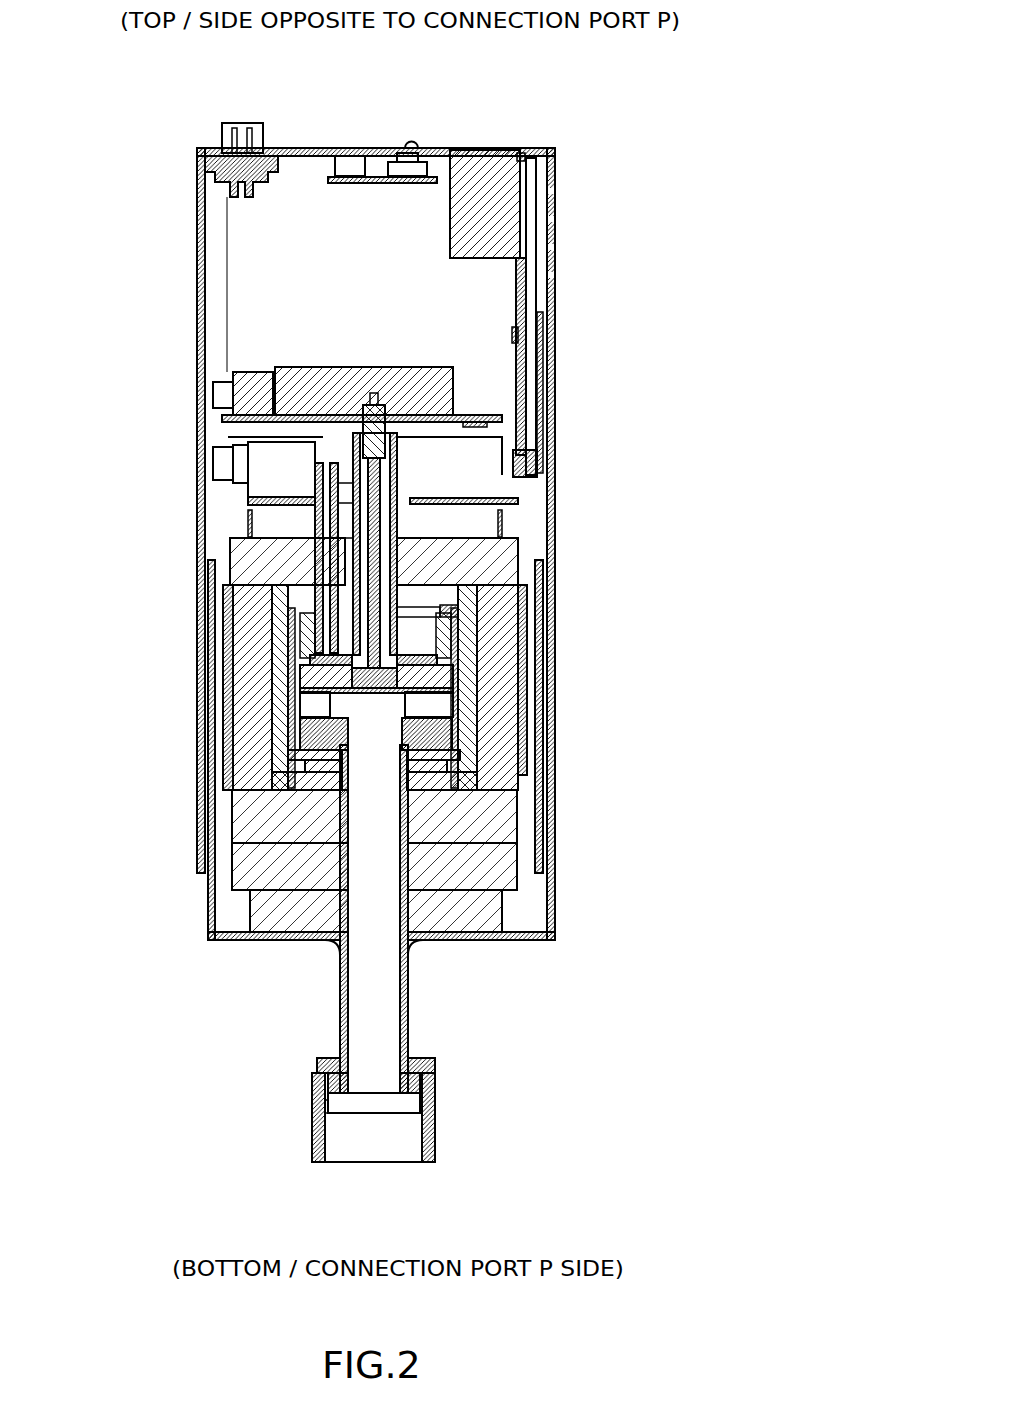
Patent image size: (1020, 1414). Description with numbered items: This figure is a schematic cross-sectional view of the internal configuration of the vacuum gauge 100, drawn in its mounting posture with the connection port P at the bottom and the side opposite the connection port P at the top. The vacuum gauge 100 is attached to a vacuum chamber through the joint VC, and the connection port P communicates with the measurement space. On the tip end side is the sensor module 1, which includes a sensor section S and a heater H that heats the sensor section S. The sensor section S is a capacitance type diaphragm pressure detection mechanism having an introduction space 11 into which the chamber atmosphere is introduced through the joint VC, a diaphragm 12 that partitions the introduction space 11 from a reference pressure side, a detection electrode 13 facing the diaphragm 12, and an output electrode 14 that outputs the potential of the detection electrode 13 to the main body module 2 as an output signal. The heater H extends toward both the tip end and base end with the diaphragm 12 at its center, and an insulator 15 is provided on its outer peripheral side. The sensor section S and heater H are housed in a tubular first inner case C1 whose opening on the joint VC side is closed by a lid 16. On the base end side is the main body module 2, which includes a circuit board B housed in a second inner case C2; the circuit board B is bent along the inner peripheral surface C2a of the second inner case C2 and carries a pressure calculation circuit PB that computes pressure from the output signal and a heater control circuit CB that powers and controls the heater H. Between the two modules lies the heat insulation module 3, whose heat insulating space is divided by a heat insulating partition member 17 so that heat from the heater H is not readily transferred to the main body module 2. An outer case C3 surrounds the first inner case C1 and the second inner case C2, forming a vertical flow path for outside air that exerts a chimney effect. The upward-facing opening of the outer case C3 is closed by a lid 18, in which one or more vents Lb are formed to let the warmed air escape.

The vacuum gauge 100 is at (152, 80).
The lid 18 is at (381, 147).
The vent Lb is at (438, 150).
The circuit board B is at (556, 176).
The main body module 2 is at (658, 234).
The heater control circuit CB is at (372, 367).
The inner peripheral surface C2a is at (518, 333).
The second inner case C2 is at (556, 342).
The pressure calculation circuit PB is at (556, 370).
The outer case C3 is at (197, 440).
The heat insulating partition member 17 is at (518, 500).
The heat insulation module 3 is at (610, 520).
The insulator 15 is at (520, 592).
The heater H is at (480, 633).
The sensor module 1 is at (613, 675).
The sensor section S is at (140, 662).
The output electrode 14 is at (350, 660).
The detection electrode 13 is at (360, 672).
The diaphragm 12 is at (330, 692).
The introduction space 11 is at (392, 732).
The first inner case C1 is at (548, 912).
The lid 16 is at (512, 950).
The joint VC is at (437, 1130).
The connection port P is at (374, 1094).